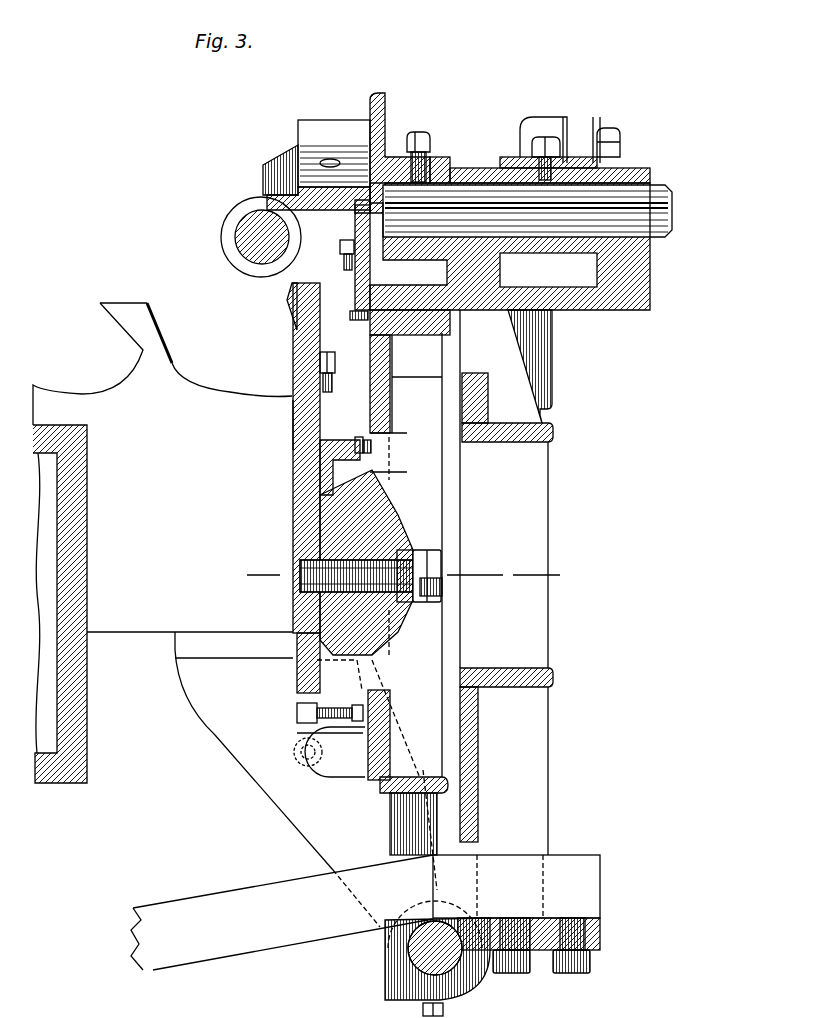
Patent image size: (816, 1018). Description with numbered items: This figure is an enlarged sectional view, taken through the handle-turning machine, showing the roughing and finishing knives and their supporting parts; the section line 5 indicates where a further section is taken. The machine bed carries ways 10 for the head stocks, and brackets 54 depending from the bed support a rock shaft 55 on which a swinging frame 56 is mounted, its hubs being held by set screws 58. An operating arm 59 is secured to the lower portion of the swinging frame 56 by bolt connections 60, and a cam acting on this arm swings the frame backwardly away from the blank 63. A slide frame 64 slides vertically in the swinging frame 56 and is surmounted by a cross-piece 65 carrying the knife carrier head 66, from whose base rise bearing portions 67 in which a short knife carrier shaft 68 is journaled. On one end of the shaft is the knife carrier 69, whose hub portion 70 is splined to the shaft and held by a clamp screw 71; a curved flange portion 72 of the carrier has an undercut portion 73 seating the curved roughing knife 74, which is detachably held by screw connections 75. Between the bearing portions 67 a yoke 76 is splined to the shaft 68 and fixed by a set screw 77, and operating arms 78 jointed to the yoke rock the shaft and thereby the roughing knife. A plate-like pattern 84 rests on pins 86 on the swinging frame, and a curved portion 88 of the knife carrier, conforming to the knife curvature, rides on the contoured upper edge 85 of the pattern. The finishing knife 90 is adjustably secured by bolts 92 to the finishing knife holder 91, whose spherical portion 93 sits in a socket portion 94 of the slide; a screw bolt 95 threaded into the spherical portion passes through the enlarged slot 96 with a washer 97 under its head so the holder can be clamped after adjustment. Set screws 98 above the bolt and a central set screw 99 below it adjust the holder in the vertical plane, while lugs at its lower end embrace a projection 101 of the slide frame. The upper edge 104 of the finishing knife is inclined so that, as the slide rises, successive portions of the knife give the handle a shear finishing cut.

The section line 5— 5 is at (401, 576).
The ways 10 is at (160, 332).
The brackets 54 is at (243, 745).
The rock shaft 55 is at (417, 953).
The swinging frame 56 is at (500, 810).
The set screws 58 is at (444, 1010).
The operating arm 59 is at (230, 904).
The bolt connections 60 is at (590, 936).
The blank 63 is at (240, 222).
The slide frame 64 is at (430, 541).
The cross-piece 65 is at (450, 326).
The knife carrier head 66 is at (640, 297).
The bearing portions 67 is at (470, 167).
The knife carrier shaft 68 is at (672, 207).
The knife carrier 69 is at (384, 98).
The hub portion 70 is at (441, 158).
The clamp screw 71 is at (418, 132).
The curved flange portion 72 is at (331, 122).
The undercut portion 73 is at (320, 196).
The roughing knife 74 is at (285, 158).
The screw connections 75 is at (326, 160).
The yoke 76 is at (580, 160).
The set screw 77 is at (545, 136).
The operating arms 78 is at (553, 381).
The pattern 84 is at (357, 290).
The upper edge 85 is at (356, 214).
The pins 86 is at (352, 314).
The curved portion 88 is at (363, 210).
The finishing knife 90 is at (293, 346).
The finishing knife holder 91 is at (295, 421).
The bolts 92 is at (334, 370).
The spherical portion 93 is at (296, 539).
The socket portion 94 is at (377, 512).
The screw bolt 95 is at (396, 627).
The enlarged slot 96 is at (402, 546).
The washer 97 is at (444, 605).
The set screws 98 is at (359, 438).
The central set screw 99 is at (297, 712).
The projection 101 is at (305, 778).
The upper edge 104 is at (289, 301).